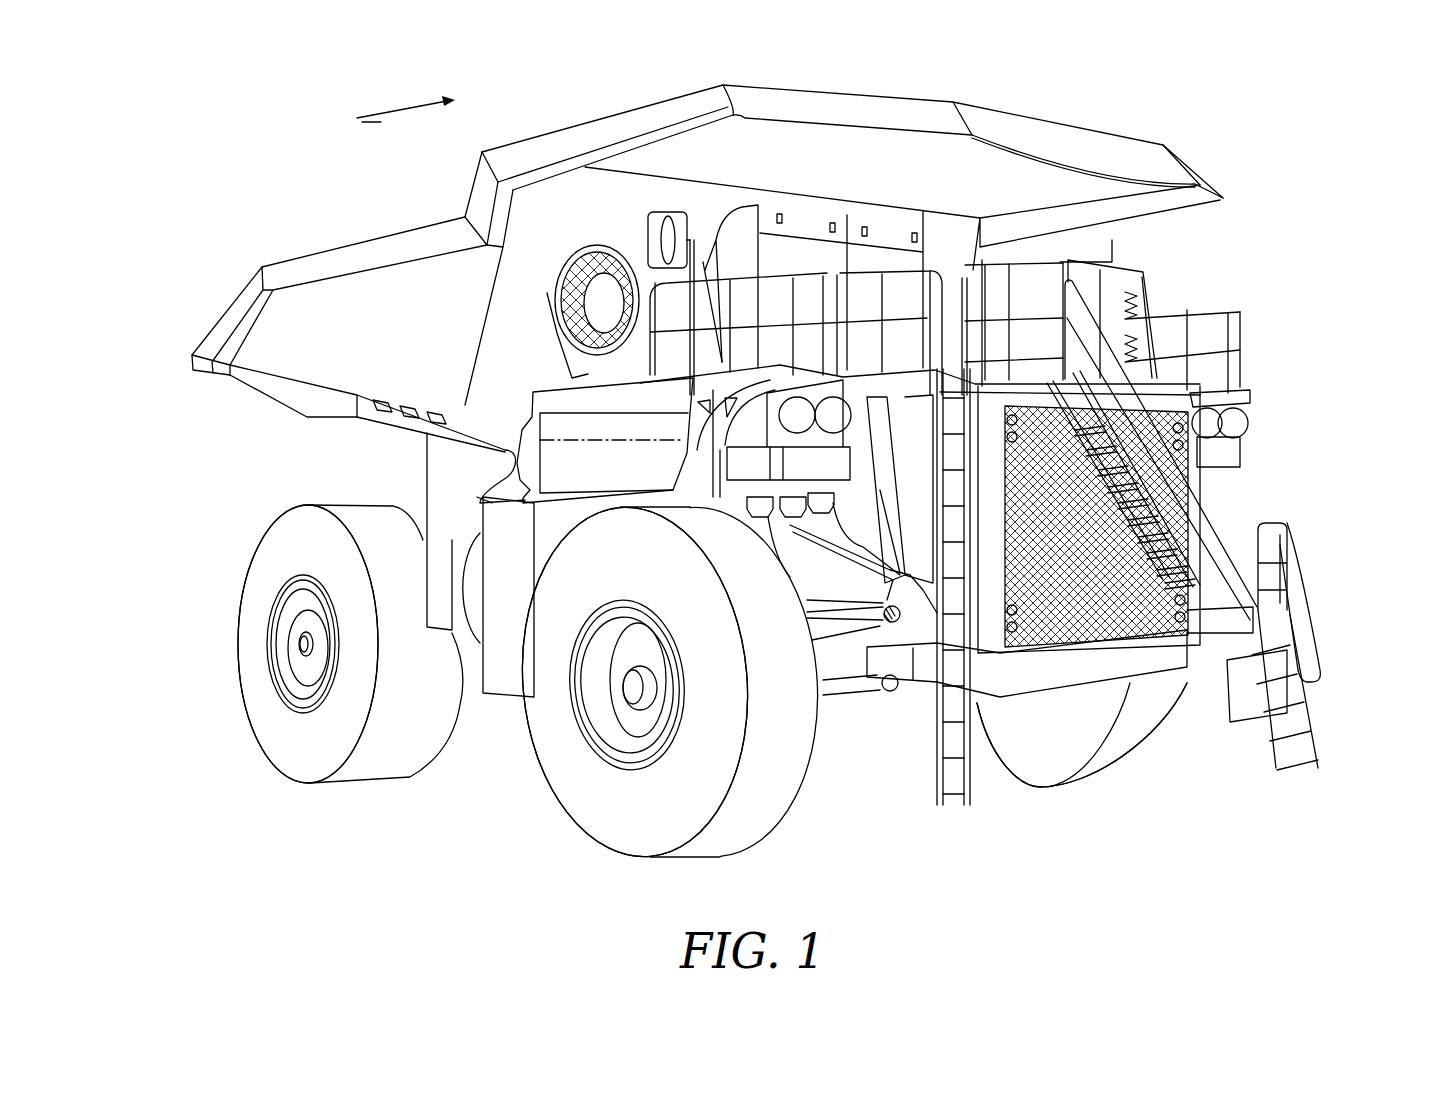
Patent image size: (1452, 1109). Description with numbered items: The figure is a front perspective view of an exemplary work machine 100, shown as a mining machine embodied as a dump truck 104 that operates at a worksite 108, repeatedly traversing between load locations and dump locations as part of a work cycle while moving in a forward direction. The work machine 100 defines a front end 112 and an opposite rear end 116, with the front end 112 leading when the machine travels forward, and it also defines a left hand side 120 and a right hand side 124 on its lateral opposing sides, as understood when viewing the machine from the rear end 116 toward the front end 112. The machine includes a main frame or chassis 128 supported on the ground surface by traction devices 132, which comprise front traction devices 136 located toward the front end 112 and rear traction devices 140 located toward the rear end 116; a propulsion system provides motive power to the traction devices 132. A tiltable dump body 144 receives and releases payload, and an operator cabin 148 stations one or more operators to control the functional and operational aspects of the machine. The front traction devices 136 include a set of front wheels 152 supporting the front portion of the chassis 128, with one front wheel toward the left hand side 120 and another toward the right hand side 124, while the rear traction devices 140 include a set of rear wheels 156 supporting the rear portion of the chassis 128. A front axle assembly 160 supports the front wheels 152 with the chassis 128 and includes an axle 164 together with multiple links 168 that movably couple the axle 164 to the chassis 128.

The work machine 100 is at (210, 110).
The dump truck 104 is at (265, 184).
The worksite 108 is at (150, 463).
The front end 112 is at (1275, 482).
The rear end 116 is at (198, 580).
The left hand side 120 is at (1340, 588).
The right hand side 124 is at (490, 727).
The chassis 128 is at (915, 700).
The traction devices 132 is at (395, 787).
The front traction devices 136 is at (582, 843).
The rear traction devices 140 is at (388, 790).
The tiltable dump body 144 is at (320, 247).
The operator cabin 148 is at (1152, 283).
The front wheels 152 is at (593, 843).
The rear wheels 156 is at (358, 782).
The front axle assembly 160 is at (833, 712).
The axle 164 is at (925, 712).
The links 168 is at (872, 702).